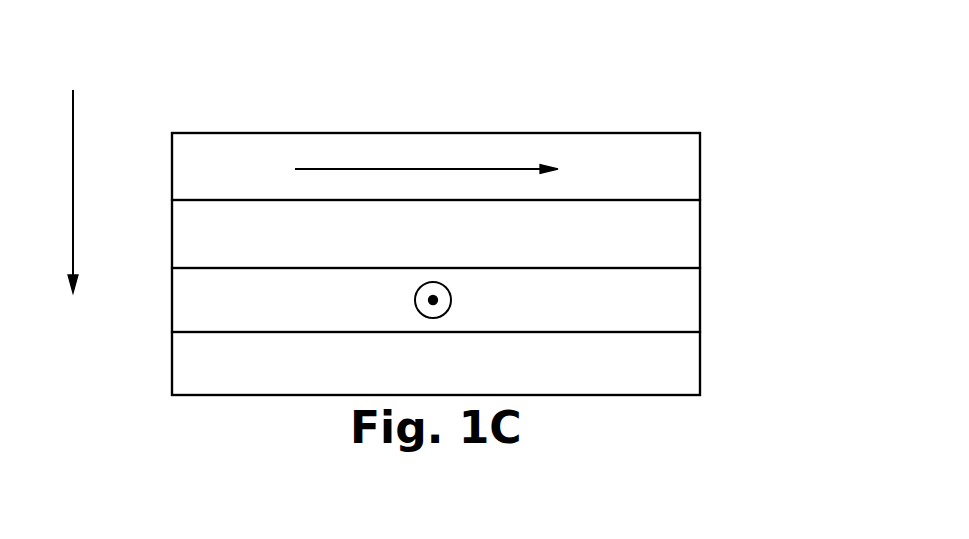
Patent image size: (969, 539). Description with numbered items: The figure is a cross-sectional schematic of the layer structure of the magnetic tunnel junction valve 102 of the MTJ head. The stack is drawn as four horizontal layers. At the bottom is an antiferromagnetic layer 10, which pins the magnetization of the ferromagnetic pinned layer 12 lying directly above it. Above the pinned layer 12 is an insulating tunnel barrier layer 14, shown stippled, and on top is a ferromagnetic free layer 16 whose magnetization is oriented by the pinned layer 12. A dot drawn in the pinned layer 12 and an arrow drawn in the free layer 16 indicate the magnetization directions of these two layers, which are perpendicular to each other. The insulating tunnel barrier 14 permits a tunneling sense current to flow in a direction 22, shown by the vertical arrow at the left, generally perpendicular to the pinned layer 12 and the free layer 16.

The magnetic tunnel junction valve 102 is at (738, 94).
The ferromagnetic free layer 16 is at (172, 181).
The insulating tunnel barrier layer 14 is at (700, 247).
The ferromagnetic pinned layer 12 is at (172, 300).
The antiferromagnetic layer 10 is at (700, 375).
The direction of tunneling sense current 22 is at (57, 191).